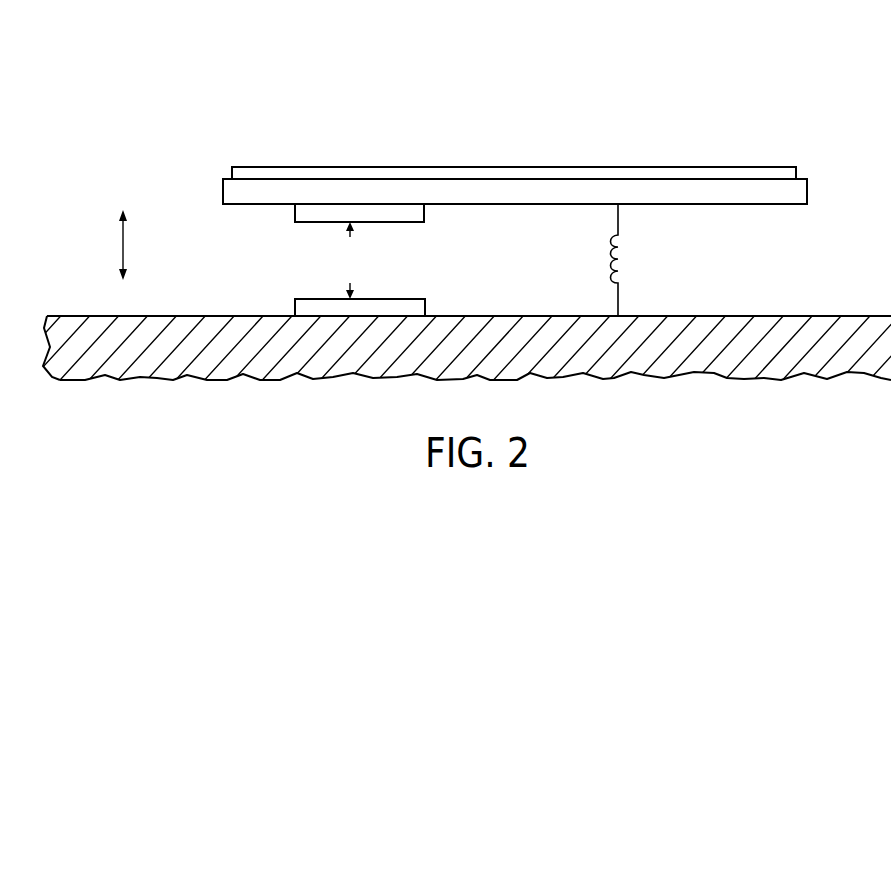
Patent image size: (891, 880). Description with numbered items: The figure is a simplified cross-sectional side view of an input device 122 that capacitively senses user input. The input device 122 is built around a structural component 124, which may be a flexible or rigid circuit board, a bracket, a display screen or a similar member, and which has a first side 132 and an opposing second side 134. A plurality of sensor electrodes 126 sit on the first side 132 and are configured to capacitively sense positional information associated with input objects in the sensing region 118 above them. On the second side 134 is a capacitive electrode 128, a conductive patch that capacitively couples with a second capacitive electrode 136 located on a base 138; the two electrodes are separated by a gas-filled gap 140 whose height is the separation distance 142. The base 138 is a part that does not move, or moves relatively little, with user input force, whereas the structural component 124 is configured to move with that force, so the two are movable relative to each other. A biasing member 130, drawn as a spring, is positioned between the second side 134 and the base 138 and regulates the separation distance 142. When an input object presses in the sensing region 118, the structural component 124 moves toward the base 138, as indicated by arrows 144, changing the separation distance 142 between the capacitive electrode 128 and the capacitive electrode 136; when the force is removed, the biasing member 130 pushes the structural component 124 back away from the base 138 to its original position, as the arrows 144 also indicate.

The sensing region 118 is at (746, 155).
The input device 122 is at (167, 137).
The structural component 124 is at (807, 190).
The sensor electrodes 126 is at (260, 167).
The capacitive electrode 128 is at (295, 212).
The biasing member 130 is at (618, 253).
The first side 132 is at (797, 176).
The second side 134 is at (793, 204).
The capacitive electrode 136 is at (295, 306).
The base 138 is at (107, 342).
The gap 140 is at (408, 253).
The separation distance 142 is at (350, 260).
The arrows 144 is at (120, 243).